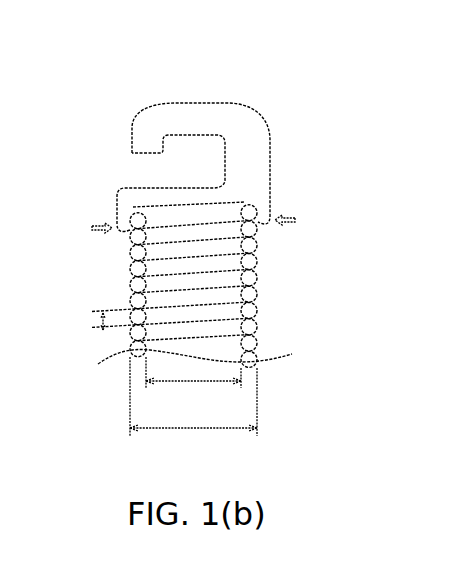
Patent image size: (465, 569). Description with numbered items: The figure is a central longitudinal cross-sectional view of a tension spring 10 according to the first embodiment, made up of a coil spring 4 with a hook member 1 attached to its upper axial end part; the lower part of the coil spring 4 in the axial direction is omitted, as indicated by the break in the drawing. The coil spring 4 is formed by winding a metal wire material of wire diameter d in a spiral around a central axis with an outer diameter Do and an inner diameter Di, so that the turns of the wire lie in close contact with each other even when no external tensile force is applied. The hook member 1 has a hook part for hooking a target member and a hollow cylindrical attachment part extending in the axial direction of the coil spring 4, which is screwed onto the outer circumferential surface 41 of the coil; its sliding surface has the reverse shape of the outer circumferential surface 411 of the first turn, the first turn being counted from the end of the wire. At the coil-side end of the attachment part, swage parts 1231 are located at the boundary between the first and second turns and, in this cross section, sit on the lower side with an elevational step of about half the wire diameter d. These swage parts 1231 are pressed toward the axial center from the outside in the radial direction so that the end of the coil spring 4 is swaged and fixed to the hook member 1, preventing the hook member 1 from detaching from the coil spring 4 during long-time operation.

The tension spring 10 is at (225, 195).
The hook member 1 is at (262, 167).
The coil spring 4 is at (225, 269).
The outer circumferential surface 41 is at (256, 244).
The outer circumferential surface of first turn 411 is at (130, 221).
The swage part 1231 is at (194, 227).
The wire diameter d is at (91, 323).
The inner diameter Di is at (193, 382).
The outer diameter Do is at (193, 406).